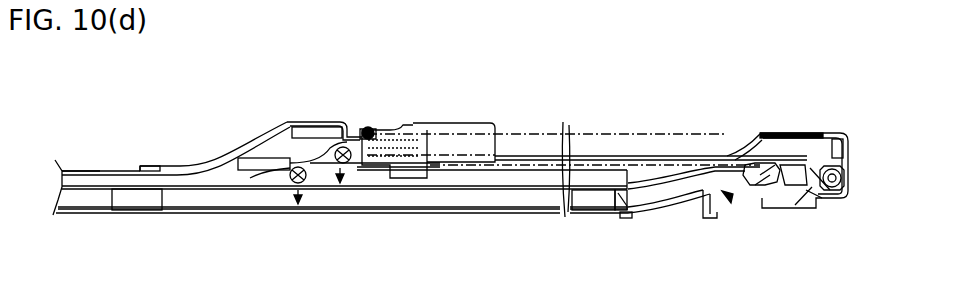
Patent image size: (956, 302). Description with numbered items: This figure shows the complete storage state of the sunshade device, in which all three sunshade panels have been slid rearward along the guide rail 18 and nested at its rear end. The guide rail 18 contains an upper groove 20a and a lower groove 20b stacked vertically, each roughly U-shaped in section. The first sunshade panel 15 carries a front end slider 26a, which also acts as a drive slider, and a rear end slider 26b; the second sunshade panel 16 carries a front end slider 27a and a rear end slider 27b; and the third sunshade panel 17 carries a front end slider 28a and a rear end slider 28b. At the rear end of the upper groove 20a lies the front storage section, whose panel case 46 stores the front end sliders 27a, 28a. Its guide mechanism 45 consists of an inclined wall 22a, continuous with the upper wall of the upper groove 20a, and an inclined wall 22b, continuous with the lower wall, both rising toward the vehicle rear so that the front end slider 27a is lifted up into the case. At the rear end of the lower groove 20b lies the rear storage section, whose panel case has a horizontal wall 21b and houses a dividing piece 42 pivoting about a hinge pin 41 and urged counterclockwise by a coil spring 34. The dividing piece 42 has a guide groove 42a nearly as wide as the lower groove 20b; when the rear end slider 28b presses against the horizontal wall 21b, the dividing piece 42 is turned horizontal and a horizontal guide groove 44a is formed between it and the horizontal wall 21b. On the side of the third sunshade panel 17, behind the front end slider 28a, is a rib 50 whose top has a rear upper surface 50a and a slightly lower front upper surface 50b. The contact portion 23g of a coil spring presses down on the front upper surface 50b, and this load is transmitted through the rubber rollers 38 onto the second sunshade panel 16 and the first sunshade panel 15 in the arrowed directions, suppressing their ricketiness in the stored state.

The first sunshade panel 15 is at (637, 220).
The second sunshade panel 16 is at (657, 165).
The third sunshade panel 17 is at (597, 133).
The guide rail 18 is at (68, 168).
The upper groove 20a is at (85, 180).
The lower groove 20b is at (100, 200).
The horizontal wall 21b is at (825, 138).
The inclined wall 22a is at (210, 160).
The inclined wall 22b is at (250, 178).
The contact portion 23g is at (366, 129).
The front end slider 26a is at (130, 197).
The rear end slider 26b is at (598, 197).
The front end slider 27a is at (270, 163).
The rear end slider 27b is at (760, 175).
The front end slider 28a is at (295, 130).
The rear end slider 28b is at (807, 135).
The coil spring 34 is at (848, 170).
The rubber roller 38 is at (302, 177).
The hinge pin 41 is at (770, 187).
The dividing piece 42 is at (745, 163).
The guide groove 42a is at (807, 193).
The horizontal guide groove 44a is at (763, 142).
The guide mechanism 45 is at (183, 160).
The panel case 46 is at (298, 128).
The rib 50 is at (485, 150).
The rear upper surface 50a is at (447, 123).
The front upper surface 50b is at (390, 128).